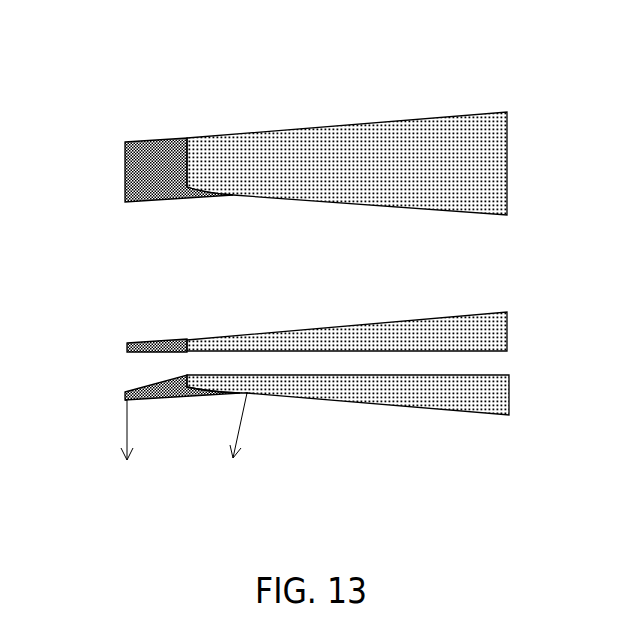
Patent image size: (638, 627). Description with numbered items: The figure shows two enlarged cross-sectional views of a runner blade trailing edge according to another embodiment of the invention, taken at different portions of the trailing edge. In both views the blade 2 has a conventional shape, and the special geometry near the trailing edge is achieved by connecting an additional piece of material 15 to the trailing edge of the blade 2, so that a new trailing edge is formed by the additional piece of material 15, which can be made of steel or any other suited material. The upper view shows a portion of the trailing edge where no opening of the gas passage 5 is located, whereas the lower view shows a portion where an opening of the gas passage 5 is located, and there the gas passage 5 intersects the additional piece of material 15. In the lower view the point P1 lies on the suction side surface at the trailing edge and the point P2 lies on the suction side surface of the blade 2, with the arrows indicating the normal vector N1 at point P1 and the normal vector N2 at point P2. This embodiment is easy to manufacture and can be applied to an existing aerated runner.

The blade 2 is at (337, 172).
The additional piece of material 15 is at (160, 168).
The gas passage 5 is at (488, 362).
The point P1 is at (125, 400).
The point P2 is at (247, 393).
The normal vector N1 is at (128, 458).
The normal vector N2 is at (233, 450).